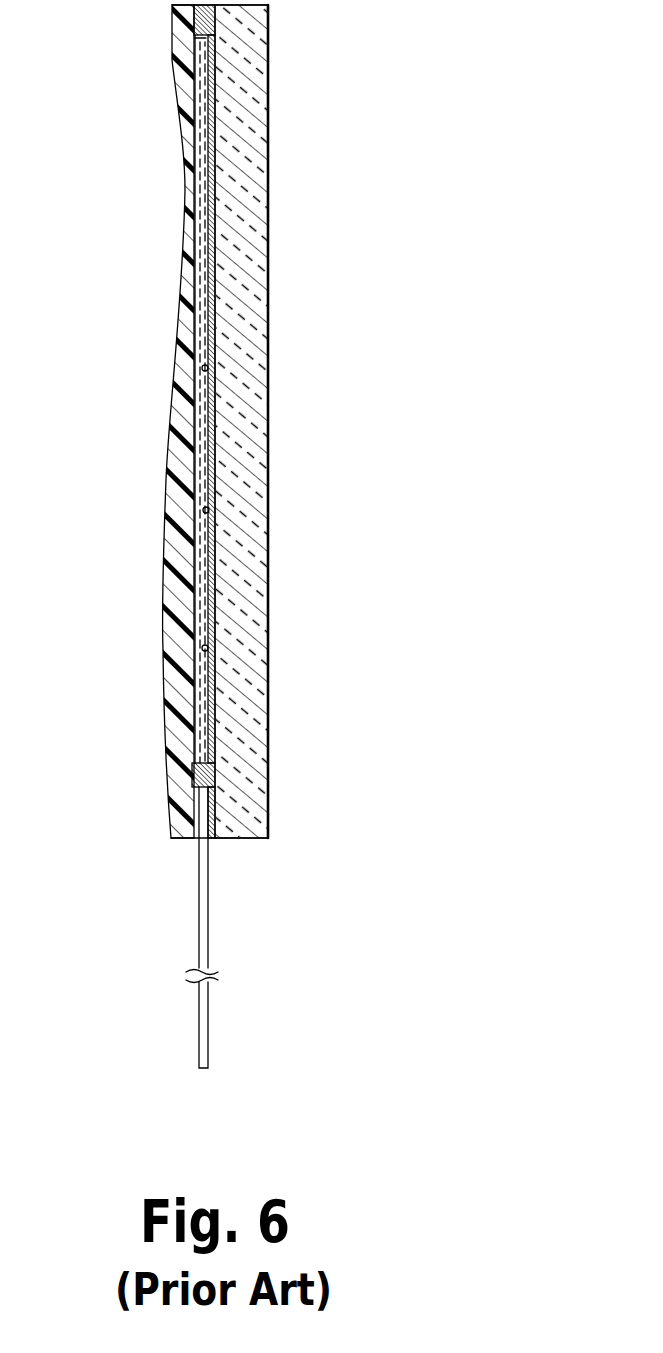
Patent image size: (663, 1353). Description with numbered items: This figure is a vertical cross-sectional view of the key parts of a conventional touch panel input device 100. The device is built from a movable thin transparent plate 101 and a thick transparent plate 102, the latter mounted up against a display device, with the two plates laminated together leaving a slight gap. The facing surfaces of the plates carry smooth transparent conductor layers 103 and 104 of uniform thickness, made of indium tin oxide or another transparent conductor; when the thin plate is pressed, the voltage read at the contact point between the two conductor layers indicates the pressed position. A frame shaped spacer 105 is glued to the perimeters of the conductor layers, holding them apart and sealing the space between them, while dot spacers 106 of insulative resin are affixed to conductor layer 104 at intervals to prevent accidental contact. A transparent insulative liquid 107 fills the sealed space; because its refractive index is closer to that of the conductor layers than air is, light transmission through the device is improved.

The touch panel input device 100 is at (392, 108).
The movable thin transparent plate 101 is at (185, 197).
The thick transparent plate 102 is at (252, 249).
The smooth transparent conductor layer 103 is at (200, 345).
The smooth transparent conductor layer 104 is at (218, 572).
The frame shaped spacer 105 is at (176, 768).
The dot spacer 106 is at (209, 648).
The transparent insulative liquid 107 is at (176, 490).